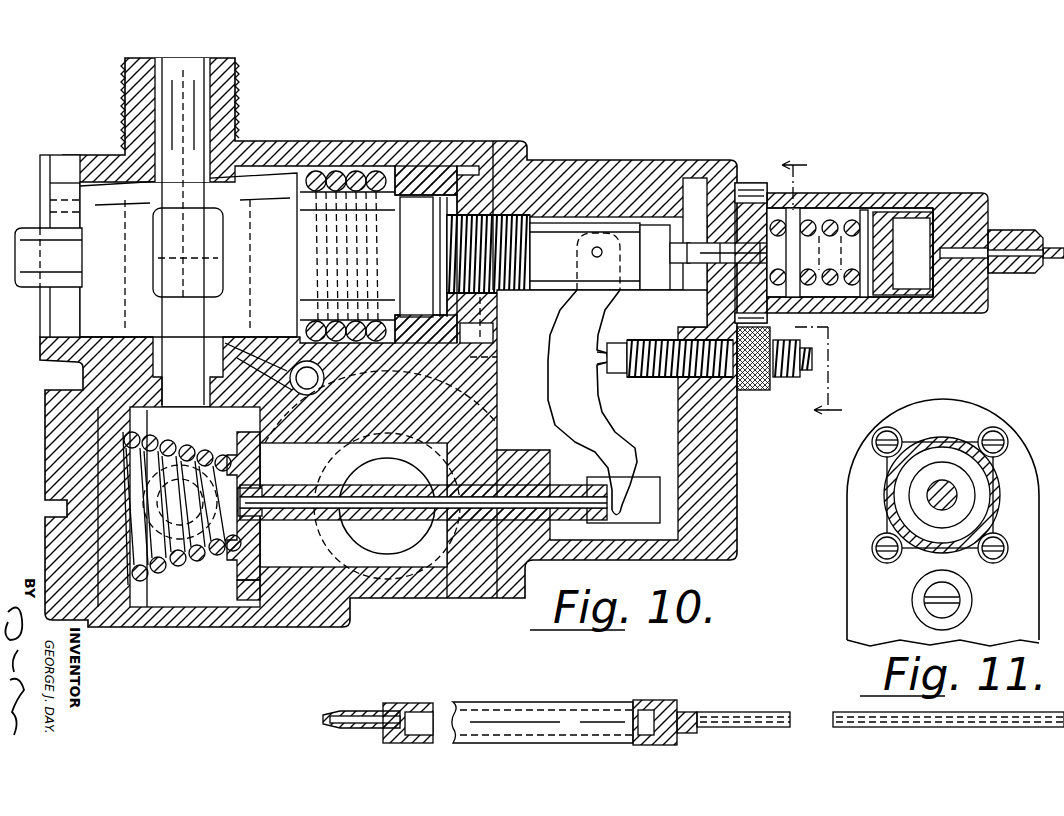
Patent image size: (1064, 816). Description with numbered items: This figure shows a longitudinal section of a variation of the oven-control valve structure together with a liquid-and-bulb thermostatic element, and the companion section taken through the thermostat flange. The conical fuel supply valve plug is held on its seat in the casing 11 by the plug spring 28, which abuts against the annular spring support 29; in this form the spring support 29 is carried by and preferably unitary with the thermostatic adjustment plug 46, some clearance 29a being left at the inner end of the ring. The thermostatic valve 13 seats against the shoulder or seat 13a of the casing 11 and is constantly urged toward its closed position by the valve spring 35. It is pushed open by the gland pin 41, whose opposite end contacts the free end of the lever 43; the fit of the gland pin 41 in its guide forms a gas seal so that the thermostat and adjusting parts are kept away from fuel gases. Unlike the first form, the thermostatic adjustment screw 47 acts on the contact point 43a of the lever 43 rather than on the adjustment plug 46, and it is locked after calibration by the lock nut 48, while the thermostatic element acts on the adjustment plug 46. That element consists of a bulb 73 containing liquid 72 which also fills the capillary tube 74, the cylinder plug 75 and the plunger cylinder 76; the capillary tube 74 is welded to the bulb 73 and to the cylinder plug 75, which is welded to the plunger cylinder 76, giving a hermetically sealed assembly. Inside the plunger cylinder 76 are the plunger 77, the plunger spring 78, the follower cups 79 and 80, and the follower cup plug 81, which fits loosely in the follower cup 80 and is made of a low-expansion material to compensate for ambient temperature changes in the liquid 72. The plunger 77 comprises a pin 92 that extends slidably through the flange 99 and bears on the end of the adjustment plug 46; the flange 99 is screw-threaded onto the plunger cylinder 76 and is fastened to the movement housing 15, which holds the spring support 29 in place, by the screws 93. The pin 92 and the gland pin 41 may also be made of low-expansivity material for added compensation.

In FIG. 10, the casing 11 is at (823, 288).
In FIG. 10, the thermostatic valve 13 is at (240, 568).
In FIG. 10, the shoulder or seat 13a is at (258, 592).
In FIG. 10, the movement housing 15 is at (740, 505).
In FIG. 10, the plug spring 28 is at (348, 170).
In FIG. 10, the annular spring support 29 is at (416, 166).
In FIG. 10, the clearance 29a is at (468, 166).
In FIG. 10, the valve spring 35 is at (158, 575).
In FIG. 10, the gland pin 41 is at (275, 520).
In FIG. 10, the lever 43 is at (606, 435).
In FIG. 10, the contact point 43a is at (600, 356).
In FIG. 10, the thermostatic adjustment plug 46 is at (606, 188).
In FIG. 10, the thermostatic adjustment screw 47 is at (795, 372).
In FIG. 11, the thermostatic adjustment screw 47 is at (955, 605).
In FIG. 10, the lock nut 48 is at (752, 390).
In FIG. 10, the liquid 72 is at (640, 710).
In FIG. 10, the bulb 73 is at (585, 712).
In FIG. 10, the capillary tube 74 is at (740, 714).
In FIG. 10, the cylinder plug 75 is at (990, 225).
In FIG. 10, the plunger cylinder 76 is at (958, 200).
In FIG. 10, the plunger 77 is at (852, 208).
In FIG. 10, the plunger spring 78 is at (826, 220).
In FIG. 10, the follower cup 79 is at (864, 298).
In FIG. 10, the follower cup 80 is at (890, 296).
In FIG. 10, the follower cup plug 81 is at (922, 298).
In FIG. 10, the pin 92 is at (696, 290).
In FIG. 10, the screws 93 is at (758, 192).
In FIG. 11, the screws 93 is at (996, 438).
In FIG. 10, the flange 99 is at (745, 184).